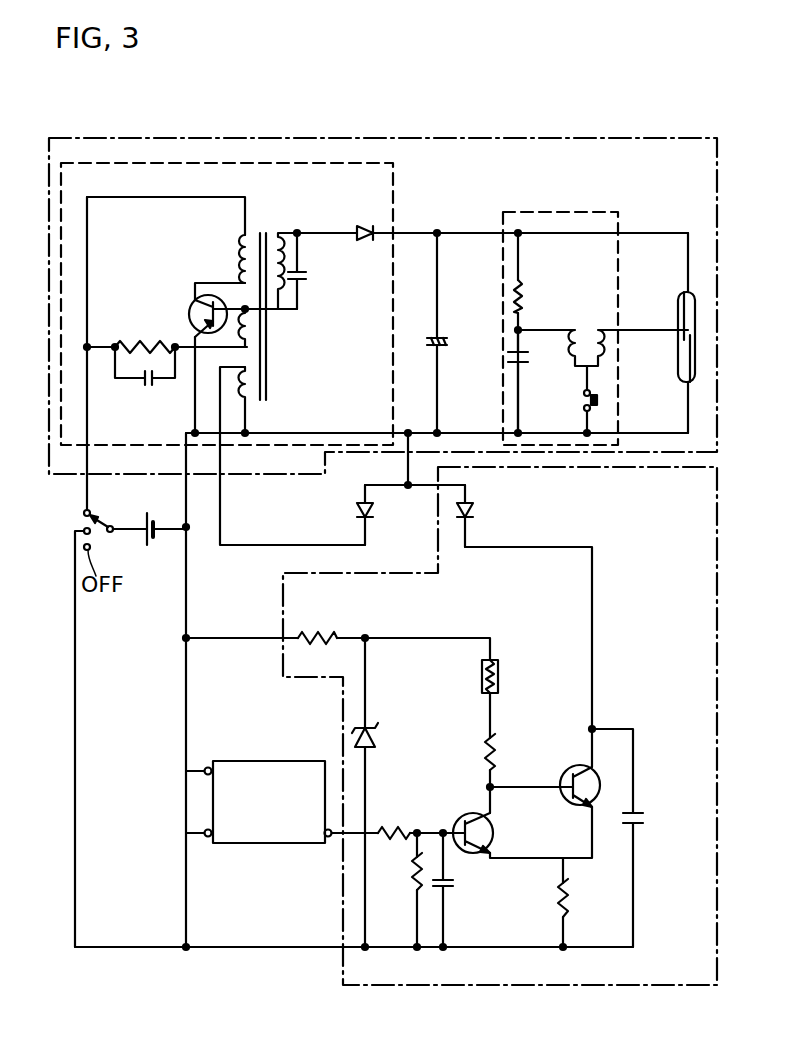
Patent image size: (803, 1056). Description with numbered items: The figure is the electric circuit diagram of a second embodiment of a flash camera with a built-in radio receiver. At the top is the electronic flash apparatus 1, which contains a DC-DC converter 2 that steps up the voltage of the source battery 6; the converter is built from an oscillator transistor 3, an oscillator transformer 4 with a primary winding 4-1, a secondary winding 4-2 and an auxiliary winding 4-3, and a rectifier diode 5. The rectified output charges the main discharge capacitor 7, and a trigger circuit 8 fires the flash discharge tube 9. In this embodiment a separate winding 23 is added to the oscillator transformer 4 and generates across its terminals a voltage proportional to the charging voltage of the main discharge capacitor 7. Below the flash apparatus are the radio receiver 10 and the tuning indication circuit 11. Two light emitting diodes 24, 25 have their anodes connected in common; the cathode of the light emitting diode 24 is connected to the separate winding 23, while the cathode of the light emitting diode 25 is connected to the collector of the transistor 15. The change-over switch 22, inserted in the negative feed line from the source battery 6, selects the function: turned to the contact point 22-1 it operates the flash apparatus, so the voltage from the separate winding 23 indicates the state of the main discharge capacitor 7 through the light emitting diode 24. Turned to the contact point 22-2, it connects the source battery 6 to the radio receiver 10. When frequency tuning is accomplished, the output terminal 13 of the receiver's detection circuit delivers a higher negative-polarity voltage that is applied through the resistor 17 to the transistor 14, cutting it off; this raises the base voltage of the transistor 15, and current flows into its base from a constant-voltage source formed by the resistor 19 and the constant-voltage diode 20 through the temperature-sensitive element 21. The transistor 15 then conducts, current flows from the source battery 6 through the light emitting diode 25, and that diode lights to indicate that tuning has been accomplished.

The electronic flash apparatus 1 is at (493, 138).
The DC-DC converter 2 is at (396, 165).
The oscillator transistor 3 is at (192, 304).
The oscillator transformer 4 is at (266, 232).
The primary winding 4-1 is at (240, 255).
The secondary winding 4-2 is at (288, 262).
The auxiliary winding 4-3 is at (252, 328).
The rectifier diode 5 is at (368, 241).
The source battery 6 is at (150, 540).
The main discharge capacitor 7 is at (448, 341).
The trigger circuit 8 is at (618, 212).
The flash discharge tube 9 is at (680, 378).
The radio receiver 10 is at (233, 843).
The tuning indication circuit 11 is at (622, 987).
The output terminal 13 is at (330, 843).
The transistor 14 is at (494, 828).
The transistor 15 is at (565, 772).
The resistor 17 is at (398, 828).
The resistor 19 is at (325, 633).
The constant-voltage diode 20 is at (378, 740).
The temperature-sensitive element 21 is at (499, 678).
The change-over switch 22 is at (104, 533).
The contact point 22-1 is at (92, 513).
The contact point 22-2 is at (84, 529).
The separate winding 23 is at (250, 398).
The light emitting diode 24 is at (357, 512).
The light emitting diode 25 is at (474, 513).